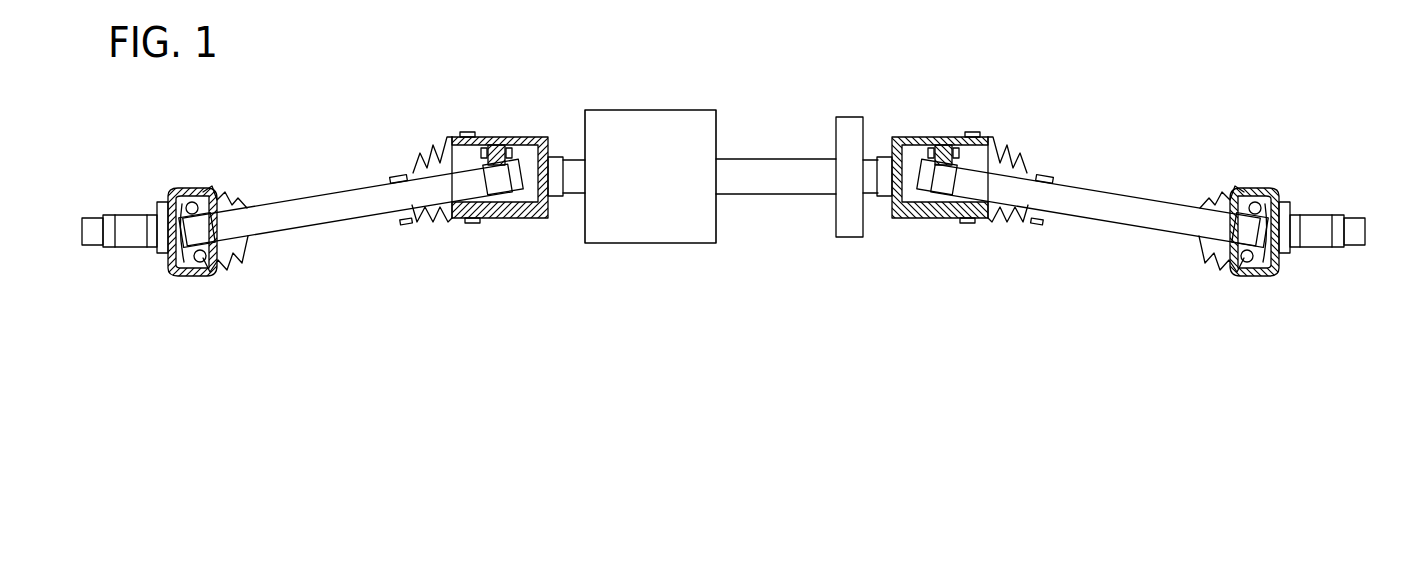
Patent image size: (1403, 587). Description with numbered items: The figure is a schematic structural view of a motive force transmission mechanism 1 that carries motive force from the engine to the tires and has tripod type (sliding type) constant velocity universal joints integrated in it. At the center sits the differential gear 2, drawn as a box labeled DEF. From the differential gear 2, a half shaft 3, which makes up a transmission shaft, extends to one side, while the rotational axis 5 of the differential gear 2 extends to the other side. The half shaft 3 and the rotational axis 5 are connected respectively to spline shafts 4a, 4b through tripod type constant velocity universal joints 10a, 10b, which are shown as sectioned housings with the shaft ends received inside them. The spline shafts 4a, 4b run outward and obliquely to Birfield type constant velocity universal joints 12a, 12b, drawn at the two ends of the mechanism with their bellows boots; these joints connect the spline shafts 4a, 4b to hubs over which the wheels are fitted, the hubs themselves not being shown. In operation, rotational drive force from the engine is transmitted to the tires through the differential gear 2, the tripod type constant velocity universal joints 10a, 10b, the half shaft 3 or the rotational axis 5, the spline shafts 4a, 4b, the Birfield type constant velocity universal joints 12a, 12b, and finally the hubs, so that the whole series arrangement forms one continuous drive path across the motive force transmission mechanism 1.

The motive force transmission mechanism 1 is at (1089, 48).
The differential gear 2 is at (655, 124).
The half shaft 3 is at (770, 163).
The spline shaft 4a is at (329, 200).
The spline shaft 4b is at (1120, 200).
The rotational axis of the differential gear 5 is at (573, 194).
The tripod type constant velocity universal joint 10a is at (493, 140).
The tripod type constant velocity universal joint 10b is at (950, 140).
The Birfield type constant velocity universal joint 12a is at (176, 190).
The Birfield type constant velocity universal joint 12b is at (1270, 190).